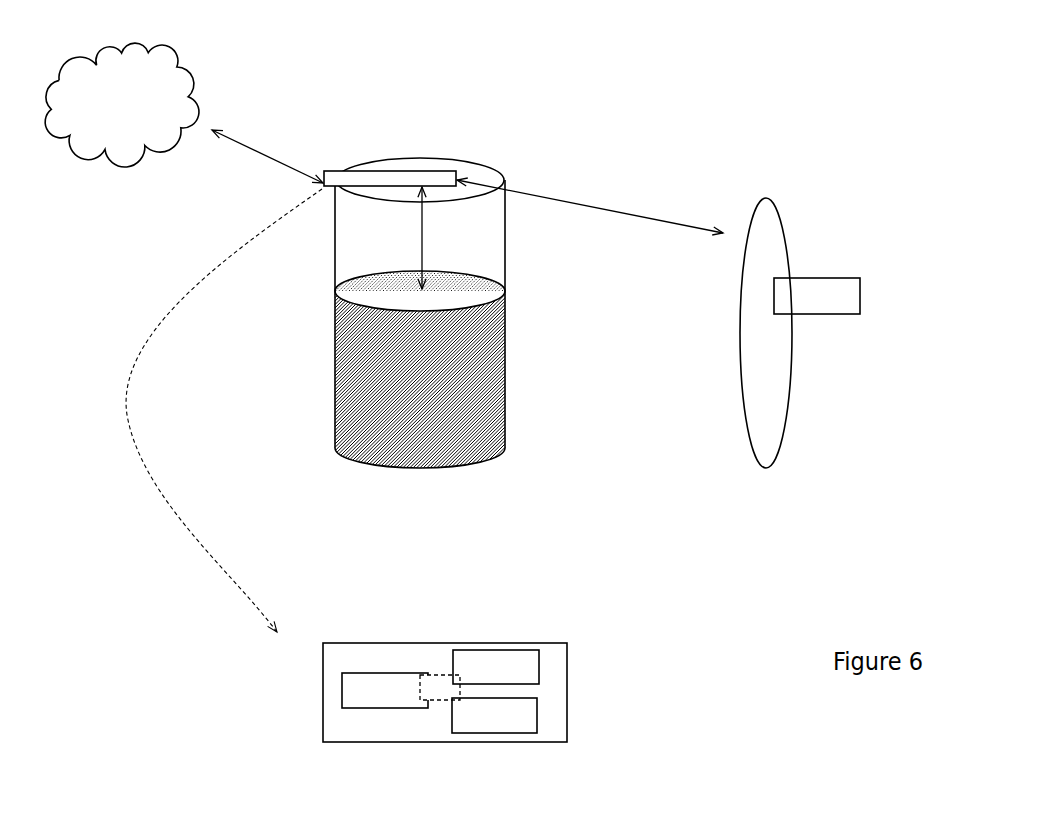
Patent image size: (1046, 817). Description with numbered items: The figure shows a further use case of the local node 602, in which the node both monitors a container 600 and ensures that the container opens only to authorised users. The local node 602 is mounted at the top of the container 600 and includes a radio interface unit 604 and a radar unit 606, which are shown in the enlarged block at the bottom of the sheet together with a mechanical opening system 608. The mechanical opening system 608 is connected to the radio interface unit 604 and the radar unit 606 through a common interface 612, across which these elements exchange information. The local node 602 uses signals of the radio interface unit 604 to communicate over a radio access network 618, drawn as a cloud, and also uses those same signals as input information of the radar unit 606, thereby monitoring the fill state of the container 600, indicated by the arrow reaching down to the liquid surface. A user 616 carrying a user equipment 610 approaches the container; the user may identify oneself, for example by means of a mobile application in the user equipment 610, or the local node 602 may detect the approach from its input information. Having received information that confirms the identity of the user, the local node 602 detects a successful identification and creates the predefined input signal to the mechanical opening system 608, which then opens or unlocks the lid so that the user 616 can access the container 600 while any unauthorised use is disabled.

The container 600 is at (505, 272).
The local node 602 is at (340, 168).
The radio interface unit 604 is at (538, 718).
The radar unit 606 is at (540, 662).
The mechanical opening system 608 is at (342, 695).
The user equipment 610 is at (837, 277).
The common interface 612 is at (437, 674).
The user 616 is at (757, 462).
The radio access network 618 is at (180, 65).